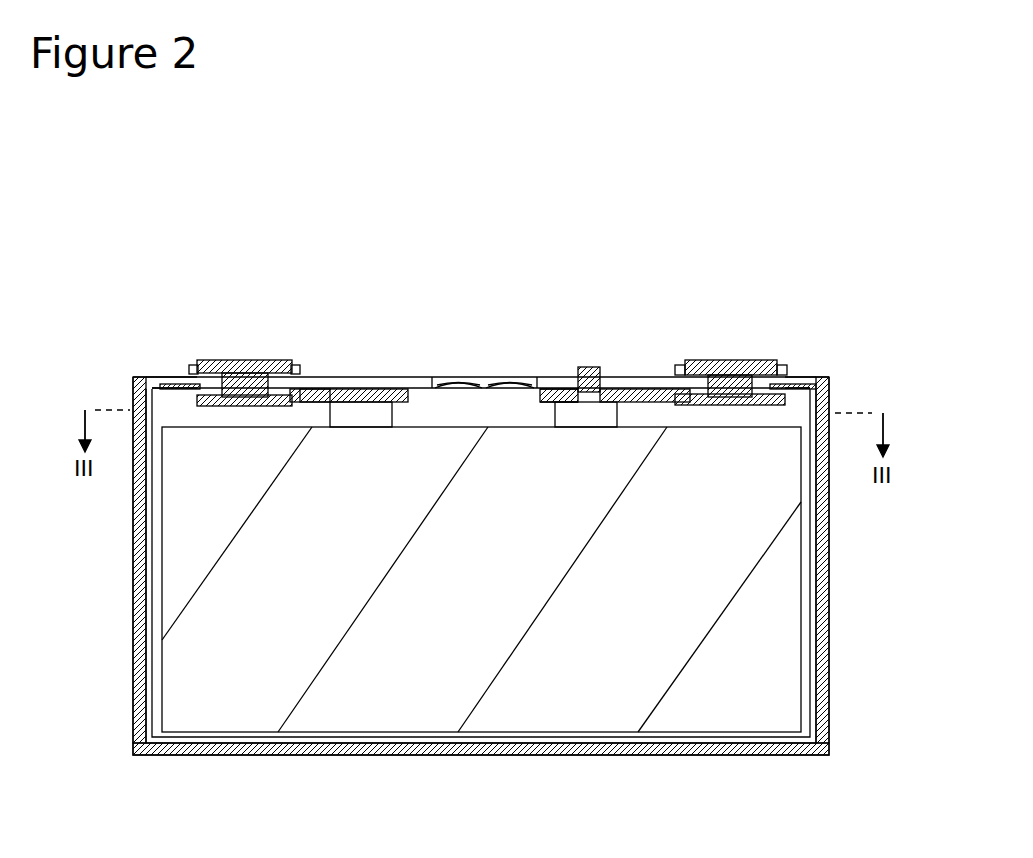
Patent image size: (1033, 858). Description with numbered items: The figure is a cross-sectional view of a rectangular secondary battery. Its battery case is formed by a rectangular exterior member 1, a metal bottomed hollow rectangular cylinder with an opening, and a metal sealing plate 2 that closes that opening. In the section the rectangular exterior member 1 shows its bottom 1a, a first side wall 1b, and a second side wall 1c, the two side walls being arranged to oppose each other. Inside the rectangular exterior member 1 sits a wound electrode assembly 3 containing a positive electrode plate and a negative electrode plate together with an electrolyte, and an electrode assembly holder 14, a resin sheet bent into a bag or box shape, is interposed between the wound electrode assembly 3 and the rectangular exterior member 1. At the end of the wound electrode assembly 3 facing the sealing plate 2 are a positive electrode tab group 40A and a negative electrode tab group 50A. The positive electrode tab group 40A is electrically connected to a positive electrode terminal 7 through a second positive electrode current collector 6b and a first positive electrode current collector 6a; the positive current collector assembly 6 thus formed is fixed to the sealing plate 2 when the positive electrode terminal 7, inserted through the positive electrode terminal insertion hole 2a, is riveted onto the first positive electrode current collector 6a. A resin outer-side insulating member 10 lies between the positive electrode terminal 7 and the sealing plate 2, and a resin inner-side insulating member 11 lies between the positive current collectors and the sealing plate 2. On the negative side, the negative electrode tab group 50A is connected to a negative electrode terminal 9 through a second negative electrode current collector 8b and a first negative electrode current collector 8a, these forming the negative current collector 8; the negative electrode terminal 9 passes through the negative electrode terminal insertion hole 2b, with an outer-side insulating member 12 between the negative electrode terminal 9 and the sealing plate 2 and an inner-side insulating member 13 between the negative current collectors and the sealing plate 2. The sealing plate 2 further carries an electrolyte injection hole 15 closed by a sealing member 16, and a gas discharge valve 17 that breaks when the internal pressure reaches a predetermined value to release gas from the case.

The rectangular exterior member 1 is at (492, 596).
The bottom 1a is at (406, 755).
The first side wall 1b is at (823, 668).
The second side wall 1c is at (162, 600).
The sealing plate 2 is at (518, 326).
The positive electrode terminal insertion hole 2a is at (790, 375).
The negative electrode terminal insertion hole 2b is at (173, 372).
The wound electrode assembly 3 is at (180, 678).
The positive current collector 6 is at (776, 410).
The first positive electrode current collector 6a is at (790, 402).
The second positive electrode current collector 6b is at (648, 388).
The positive electrode terminal 7 is at (727, 360).
The negative current collector 8 is at (234, 413).
The first negative electrode current collector 8a is at (205, 402).
The second negative electrode current collector 8b is at (332, 392).
The negative electrode terminal 9 is at (248, 362).
The outer-side insulating member 10 is at (785, 365).
The inner-side insulating member 11 is at (620, 388).
The outer-side insulating member 12 is at (197, 365).
The inner-side insulating member 13 is at (393, 400).
The electrode assembly holder 14 is at (812, 640).
The electrolyte injection hole 15 is at (565, 388).
The sealing member 16 is at (590, 365).
The gas discharge valve 17 is at (480, 376).
The positive electrode tab group 40A is at (550, 376).
The negative electrode tab group 50A is at (355, 390).